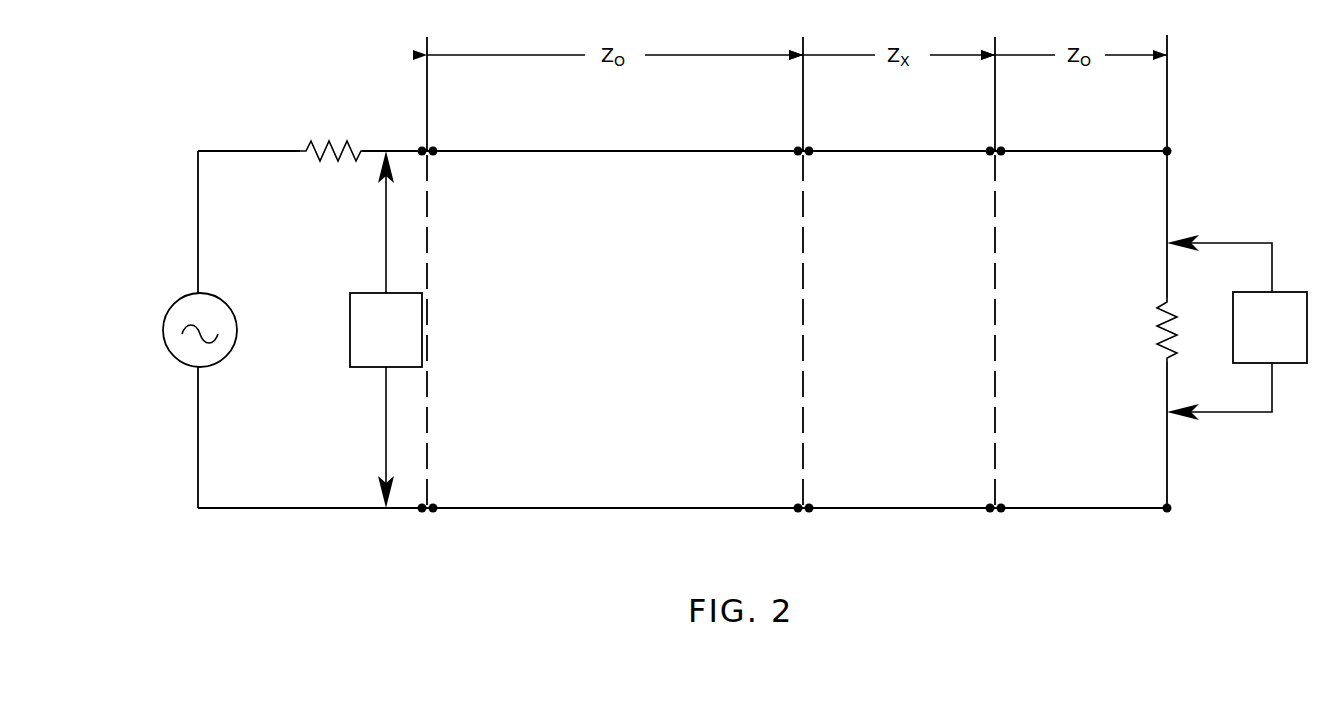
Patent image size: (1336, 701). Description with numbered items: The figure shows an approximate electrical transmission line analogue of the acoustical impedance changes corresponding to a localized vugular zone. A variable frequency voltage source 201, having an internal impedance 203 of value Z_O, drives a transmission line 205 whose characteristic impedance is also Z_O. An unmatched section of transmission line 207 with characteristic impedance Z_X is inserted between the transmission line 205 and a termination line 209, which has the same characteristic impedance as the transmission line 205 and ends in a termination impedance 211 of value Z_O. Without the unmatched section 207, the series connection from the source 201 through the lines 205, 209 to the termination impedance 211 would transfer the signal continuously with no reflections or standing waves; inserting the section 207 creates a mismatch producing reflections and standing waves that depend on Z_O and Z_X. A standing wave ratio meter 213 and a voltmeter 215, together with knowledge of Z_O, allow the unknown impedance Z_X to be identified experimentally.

The variable frequency voltage source 201 is at (228, 307).
The internal impedance 203 is at (337, 162).
The transmission line 205 is at (633, 150).
The unmatched section of transmission line 207 is at (917, 150).
The termination line 209 is at (1102, 150).
The termination impedance 211 is at (1160, 338).
The standing wave ratio meter 213 is at (350, 329).
The voltmeter 215 is at (1290, 296).